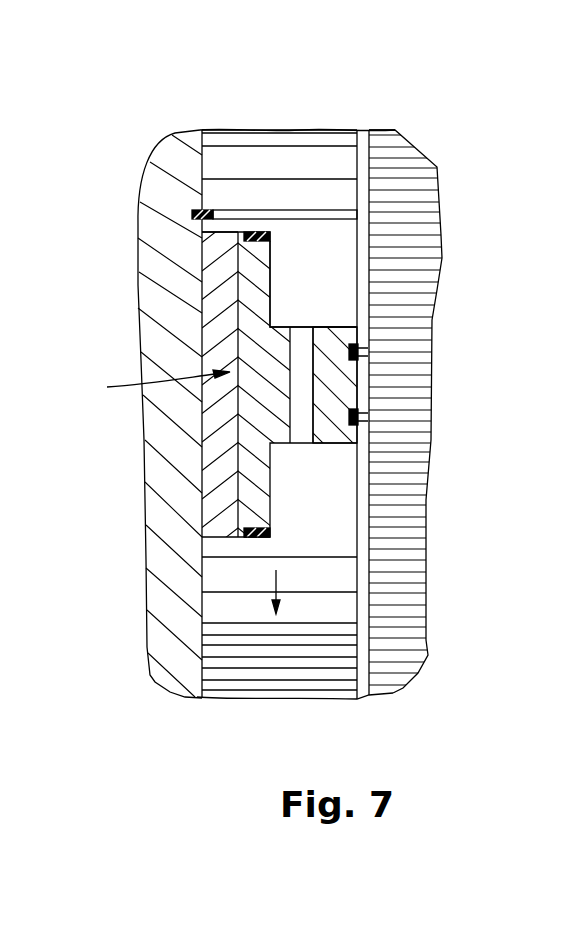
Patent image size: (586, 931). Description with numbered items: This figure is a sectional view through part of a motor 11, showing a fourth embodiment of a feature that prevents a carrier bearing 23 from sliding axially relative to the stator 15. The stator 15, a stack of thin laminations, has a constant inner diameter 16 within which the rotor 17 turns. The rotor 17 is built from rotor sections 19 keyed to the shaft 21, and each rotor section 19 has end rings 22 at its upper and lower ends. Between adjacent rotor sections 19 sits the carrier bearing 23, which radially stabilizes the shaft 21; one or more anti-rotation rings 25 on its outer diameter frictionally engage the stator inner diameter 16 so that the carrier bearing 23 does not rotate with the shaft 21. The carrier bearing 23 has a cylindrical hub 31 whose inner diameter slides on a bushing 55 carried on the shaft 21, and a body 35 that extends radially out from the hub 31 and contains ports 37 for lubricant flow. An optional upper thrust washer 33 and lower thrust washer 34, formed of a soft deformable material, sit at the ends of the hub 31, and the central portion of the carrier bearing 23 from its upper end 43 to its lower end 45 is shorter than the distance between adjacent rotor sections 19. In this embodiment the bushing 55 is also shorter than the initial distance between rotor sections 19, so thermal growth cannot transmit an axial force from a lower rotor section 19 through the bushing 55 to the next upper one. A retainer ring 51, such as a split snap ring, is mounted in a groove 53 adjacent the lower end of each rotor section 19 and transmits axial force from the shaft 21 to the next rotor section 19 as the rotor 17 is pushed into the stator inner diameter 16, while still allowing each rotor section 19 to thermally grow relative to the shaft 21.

The motor 11 is at (470, 165).
The stator 15 is at (422, 262).
The stator inner diameter 16 is at (356, 231).
The rotor 17 is at (338, 115).
The rotor section 19 is at (300, 128).
The shaft 21 is at (160, 468).
The end ring 22 is at (267, 158).
The carrier bearing 23 is at (153, 385).
The anti-rotation ring 25 is at (362, 354).
The carrier bearing hub 31 is at (263, 285).
The upper thrust washer 33 is at (272, 236).
The lower thrust washer 34 is at (272, 532).
The carrier body 35 is at (278, 435).
The port 37 is at (298, 336).
The upper end 43 is at (258, 232).
The lower end 45 is at (247, 538).
The retainer ring 51 is at (208, 209).
The groove 53 is at (201, 220).
The bushing 55 is at (215, 311).